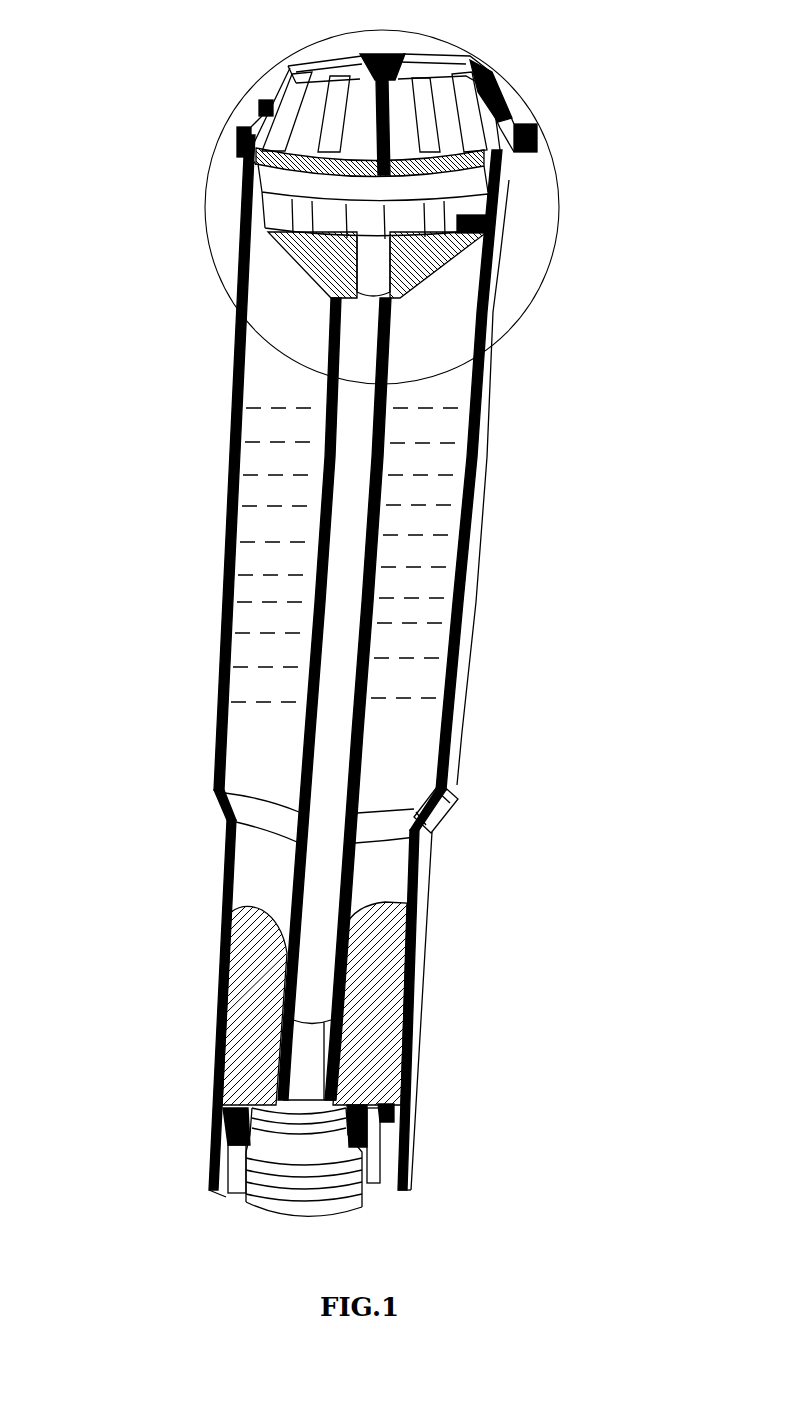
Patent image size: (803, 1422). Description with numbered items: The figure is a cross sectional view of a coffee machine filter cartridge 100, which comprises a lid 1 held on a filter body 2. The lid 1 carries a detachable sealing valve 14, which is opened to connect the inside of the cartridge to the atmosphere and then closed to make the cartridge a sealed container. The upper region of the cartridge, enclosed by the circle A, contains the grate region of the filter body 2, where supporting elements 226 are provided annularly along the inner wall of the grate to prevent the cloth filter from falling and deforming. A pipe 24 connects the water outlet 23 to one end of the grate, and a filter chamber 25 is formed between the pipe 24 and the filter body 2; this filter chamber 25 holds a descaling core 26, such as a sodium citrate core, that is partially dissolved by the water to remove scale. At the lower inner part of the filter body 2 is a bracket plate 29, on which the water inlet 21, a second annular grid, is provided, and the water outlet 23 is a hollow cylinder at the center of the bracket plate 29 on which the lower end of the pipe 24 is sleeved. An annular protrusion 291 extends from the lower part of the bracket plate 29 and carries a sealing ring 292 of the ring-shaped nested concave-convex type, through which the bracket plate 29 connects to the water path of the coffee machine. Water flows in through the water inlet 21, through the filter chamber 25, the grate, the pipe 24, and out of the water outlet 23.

The coffee machine filter cartridge 100 is at (176, 166).
The lid 1 is at (313, 64).
The detachable sealing valve 14 is at (391, 49).
The detail region A is at (535, 120).
The filter body 2 is at (470, 592).
The supporting elements 226 is at (344, 254).
The pipe 24 is at (395, 401).
The filter chamber 25 is at (235, 522).
The descaling core 26 is at (462, 469).
The water outlet 23 is at (319, 1085).
The bracket plate 29 is at (360, 1096).
The water inlet 21 is at (386, 1120).
The annular protrusion 291 is at (233, 1121).
The sealing ring 292 is at (360, 1213).